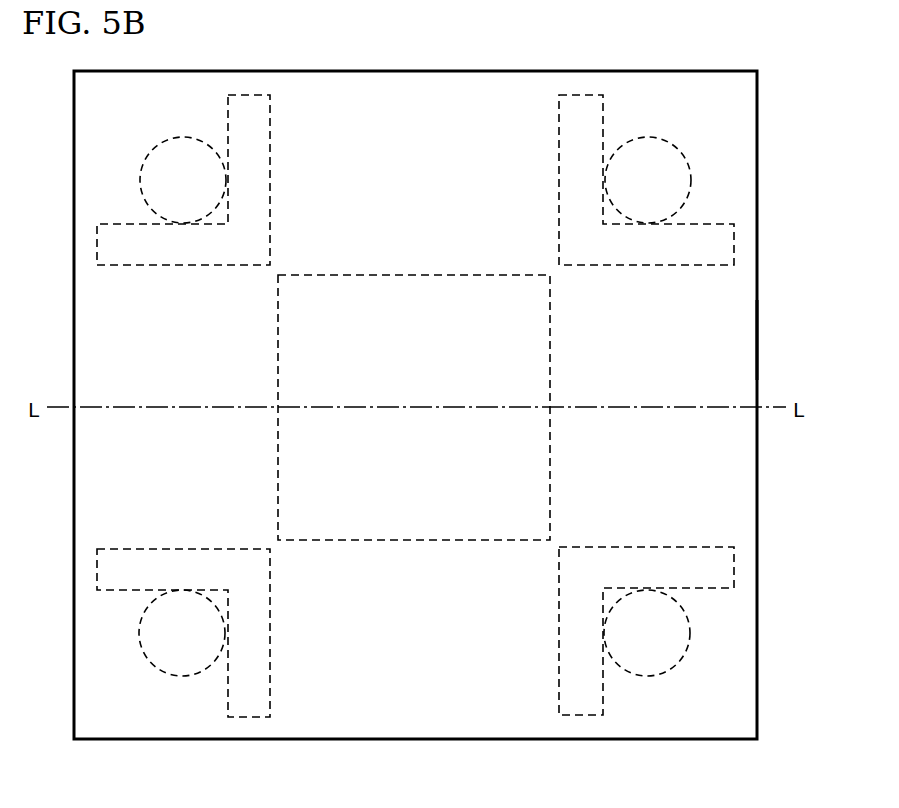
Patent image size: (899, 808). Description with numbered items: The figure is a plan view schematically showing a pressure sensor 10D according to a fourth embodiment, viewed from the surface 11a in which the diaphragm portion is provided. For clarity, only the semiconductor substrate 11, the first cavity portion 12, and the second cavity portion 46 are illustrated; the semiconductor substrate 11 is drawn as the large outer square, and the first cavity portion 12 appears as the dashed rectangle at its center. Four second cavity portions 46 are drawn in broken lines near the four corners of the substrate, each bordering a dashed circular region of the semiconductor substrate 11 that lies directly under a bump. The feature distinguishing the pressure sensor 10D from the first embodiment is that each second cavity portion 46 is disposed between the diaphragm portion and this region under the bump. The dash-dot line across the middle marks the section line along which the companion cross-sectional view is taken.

The pressure sensor 10D is at (848, 29).
The semiconductor substrate 11 is at (742, 354).
The surface 11a is at (738, 328).
The first cavity portion 12 is at (413, 513).
The second cavity portion 46 is at (110, 244).